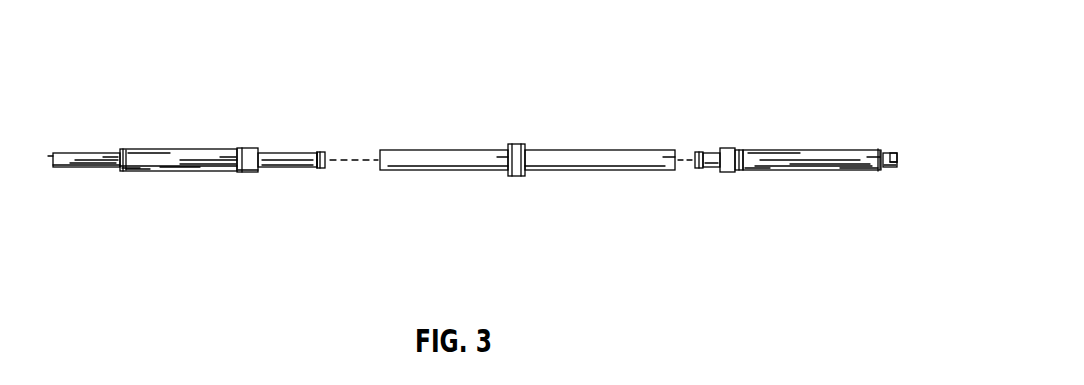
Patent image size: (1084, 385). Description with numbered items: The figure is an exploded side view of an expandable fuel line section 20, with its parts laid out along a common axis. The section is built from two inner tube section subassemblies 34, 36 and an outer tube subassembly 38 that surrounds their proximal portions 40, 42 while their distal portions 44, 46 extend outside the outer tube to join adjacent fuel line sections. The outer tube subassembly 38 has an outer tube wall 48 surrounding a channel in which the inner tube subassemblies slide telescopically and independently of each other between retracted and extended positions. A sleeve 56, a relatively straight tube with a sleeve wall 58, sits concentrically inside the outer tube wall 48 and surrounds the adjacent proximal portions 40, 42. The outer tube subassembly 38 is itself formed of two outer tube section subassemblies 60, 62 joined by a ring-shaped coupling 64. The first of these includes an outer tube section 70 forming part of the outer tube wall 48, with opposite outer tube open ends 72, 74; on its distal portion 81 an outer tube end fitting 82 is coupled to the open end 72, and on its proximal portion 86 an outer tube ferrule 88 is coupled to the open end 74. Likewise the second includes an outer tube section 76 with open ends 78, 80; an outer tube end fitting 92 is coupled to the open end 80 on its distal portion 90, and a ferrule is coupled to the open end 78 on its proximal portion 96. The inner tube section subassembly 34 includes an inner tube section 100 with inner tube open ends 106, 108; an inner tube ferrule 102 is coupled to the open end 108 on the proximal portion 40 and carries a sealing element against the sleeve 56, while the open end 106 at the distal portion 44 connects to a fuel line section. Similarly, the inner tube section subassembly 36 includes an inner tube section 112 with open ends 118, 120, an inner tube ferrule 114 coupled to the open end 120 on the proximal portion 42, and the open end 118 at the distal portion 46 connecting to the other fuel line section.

The expandable fuel line section 20 is at (610, 68).
The inner tube section subassembly 34 is at (102, 157).
The inner tube section subassembly 36 is at (703, 170).
The outer tube subassembly 38 is at (190, 150).
The proximal portion 40 is at (283, 167).
The proximal portion 42 is at (712, 170).
The distal portion 44 is at (70, 157).
The distal portion 46 is at (897, 168).
The outer tube wall 48 is at (197, 170).
The sleeve 56 is at (427, 160).
The sleeve wall 58 is at (578, 150).
The outer tube section subassembly 60 is at (177, 170).
The outer tube section subassembly 62 is at (788, 153).
The coupling 64 is at (512, 175).
The outer tube section 70 is at (148, 155).
The outer tube open end 72 is at (120, 170).
The outer tube open end 74 is at (238, 168).
The outer tube section 76 is at (770, 153).
The outer tube open end 78 is at (743, 152).
The outer tube open end 80 is at (878, 150).
The distal portion 81 is at (127, 170).
The outer tube end fitting 82 is at (122, 152).
The proximal portion 86 is at (238, 152).
The outer tube ferrule 88 is at (248, 150).
The distal portion 90 is at (855, 170).
The outer tube end fitting 92 is at (878, 150).
The proximal portion 96 is at (747, 170).
The inner tube section 100 is at (73, 170).
The inner tube ferrule 102 is at (323, 150).
The inner tube open end 106 is at (50, 162).
The inner tube open end 108 is at (317, 150).
The inner tube section 112 is at (897, 162).
The inner tube ferrule 114 is at (697, 152).
The inner tube open end 118 is at (897, 157).
The inner tube open end 120 is at (708, 155).